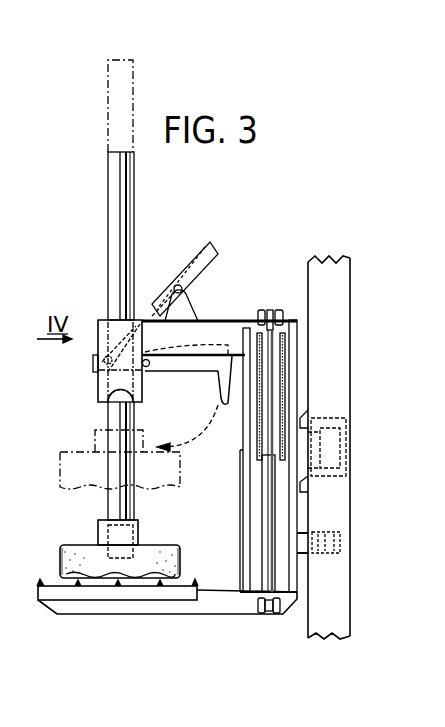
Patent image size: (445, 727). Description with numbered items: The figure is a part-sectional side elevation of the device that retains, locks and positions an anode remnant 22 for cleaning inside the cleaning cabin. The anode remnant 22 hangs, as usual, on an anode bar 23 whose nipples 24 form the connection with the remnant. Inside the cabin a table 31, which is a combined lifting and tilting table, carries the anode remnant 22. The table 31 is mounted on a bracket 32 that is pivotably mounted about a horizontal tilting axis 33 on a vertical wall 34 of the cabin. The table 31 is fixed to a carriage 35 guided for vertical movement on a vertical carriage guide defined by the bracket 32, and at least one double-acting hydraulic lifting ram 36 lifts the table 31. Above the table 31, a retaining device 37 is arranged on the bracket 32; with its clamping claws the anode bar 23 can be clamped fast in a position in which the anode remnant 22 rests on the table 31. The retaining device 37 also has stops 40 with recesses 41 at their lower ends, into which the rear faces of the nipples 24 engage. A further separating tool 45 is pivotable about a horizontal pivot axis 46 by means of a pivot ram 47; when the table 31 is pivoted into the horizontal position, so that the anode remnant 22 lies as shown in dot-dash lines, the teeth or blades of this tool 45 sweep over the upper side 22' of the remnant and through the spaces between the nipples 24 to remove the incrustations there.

The anode remnant 22 is at (91, 558).
The upper side of the anode remnant 22' is at (65, 537).
The anode bar 23 is at (115, 202).
The nipples 24 is at (136, 533).
The table 31 is at (75, 598).
The bracket 32 is at (290, 363).
The horizontal tilting axis 33 is at (333, 447).
The vertical wall 34 is at (335, 300).
The carriage 35 is at (285, 510).
The double-acting hydraulic lifting ram 36 is at (276, 572).
The retaining device 37 is at (92, 320).
The stops 40 is at (98, 378).
The recesses 41 is at (119, 394).
The pivotable separating tool 45 is at (197, 364).
The horizontal pivot axis 46 is at (148, 367).
The pivot ram 47 is at (210, 242).